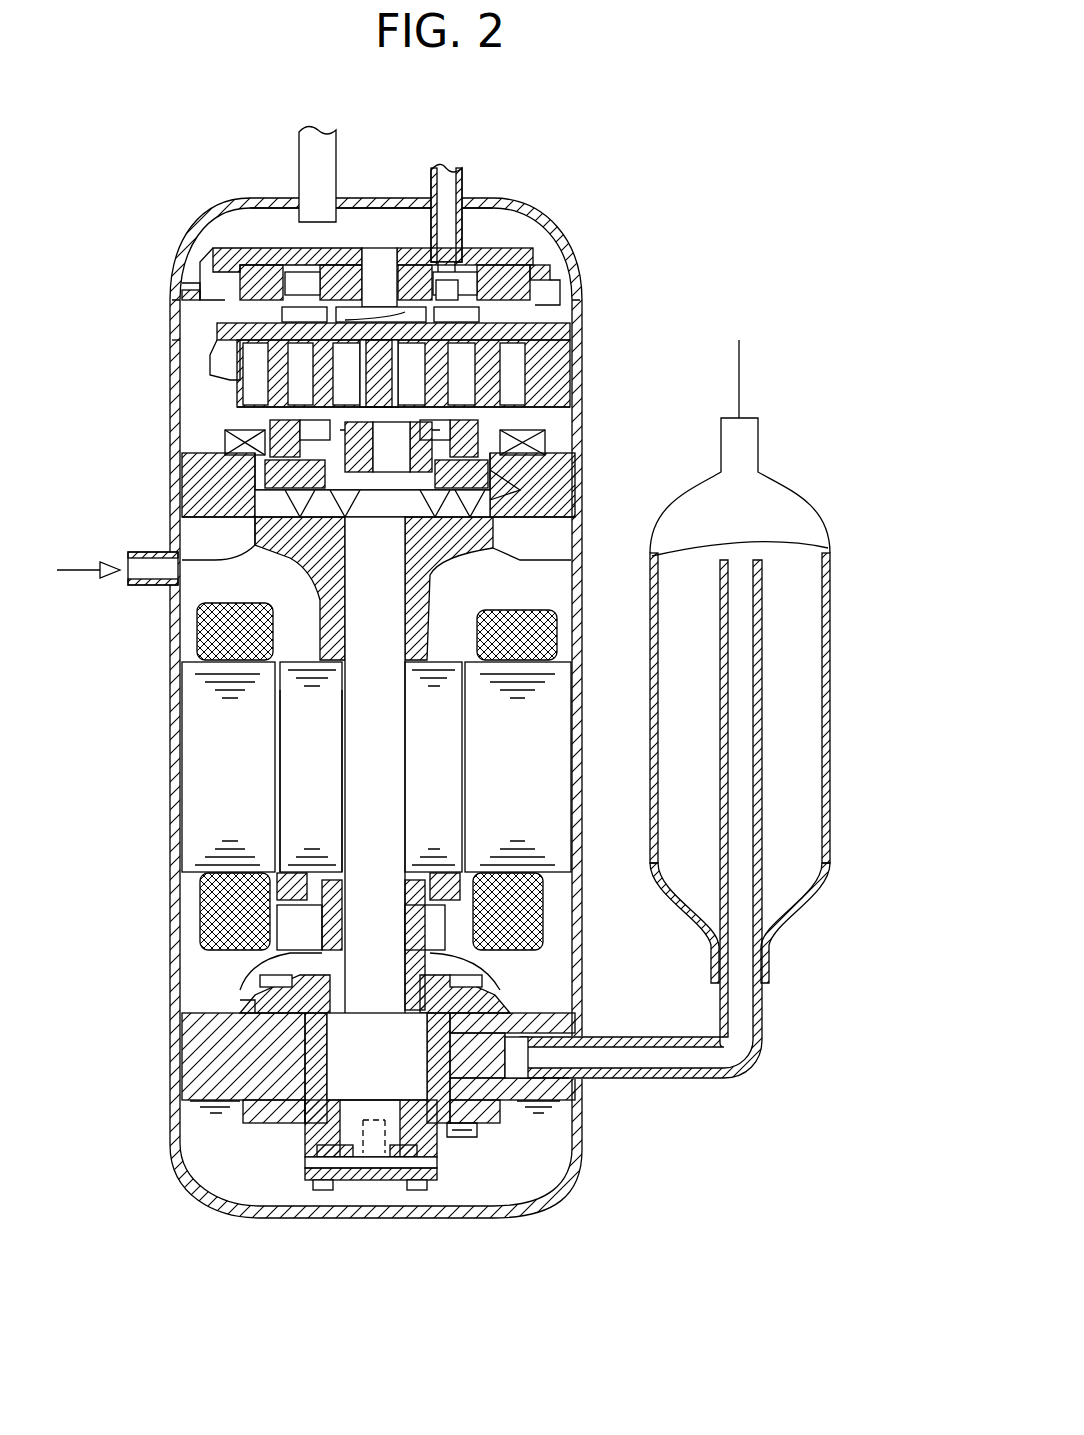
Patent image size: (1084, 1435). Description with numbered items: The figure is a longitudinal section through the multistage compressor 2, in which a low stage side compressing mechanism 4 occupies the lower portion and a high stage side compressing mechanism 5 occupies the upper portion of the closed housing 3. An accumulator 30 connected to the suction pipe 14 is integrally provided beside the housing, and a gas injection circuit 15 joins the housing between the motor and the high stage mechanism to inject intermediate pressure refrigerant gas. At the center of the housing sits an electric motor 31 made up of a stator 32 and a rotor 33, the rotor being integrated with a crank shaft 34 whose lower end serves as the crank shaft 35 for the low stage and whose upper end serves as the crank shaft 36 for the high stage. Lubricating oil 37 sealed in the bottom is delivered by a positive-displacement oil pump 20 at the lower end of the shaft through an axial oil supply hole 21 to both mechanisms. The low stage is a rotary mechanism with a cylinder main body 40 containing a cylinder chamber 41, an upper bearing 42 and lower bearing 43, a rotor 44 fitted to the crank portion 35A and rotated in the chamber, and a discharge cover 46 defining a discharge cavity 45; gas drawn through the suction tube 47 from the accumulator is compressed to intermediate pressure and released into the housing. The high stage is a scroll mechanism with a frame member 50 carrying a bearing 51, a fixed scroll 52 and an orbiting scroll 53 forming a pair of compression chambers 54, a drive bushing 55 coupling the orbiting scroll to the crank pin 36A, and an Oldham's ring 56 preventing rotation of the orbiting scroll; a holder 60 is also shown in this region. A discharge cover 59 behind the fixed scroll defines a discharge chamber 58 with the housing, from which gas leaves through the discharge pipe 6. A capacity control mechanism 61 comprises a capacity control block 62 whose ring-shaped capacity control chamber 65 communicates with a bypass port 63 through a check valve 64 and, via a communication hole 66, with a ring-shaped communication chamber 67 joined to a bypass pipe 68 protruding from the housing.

The multistage compressor 2 is at (600, 197).
The closed housing 3 is at (178, 866).
The low stage side compressing mechanism 4 is at (270, 1168).
The high stage side compressing mechanism 5 is at (190, 343).
The discharge pipe 6 is at (330, 140).
The suction pipe 14 is at (740, 378).
The gas injection circuit 15 is at (145, 590).
The positive-displacement oil pump 20 is at (350, 1185).
The oil supply hole 21 is at (375, 1150).
The accumulator 30 is at (716, 756).
The electric motor 31 is at (360, 806).
The stator 32 is at (525, 722).
The rotor 33 is at (448, 812).
The crank shaft 34 is at (365, 812).
The crank shaft 35 is at (362, 927).
The crank portion 35A is at (368, 1040).
The crank shaft 36 is at (385, 578).
The crank pin 36A is at (340, 557).
The lubricating oil 37 is at (537, 1122).
The cylinder main body 40 is at (200, 1045).
The cylinder chamber 41 is at (300, 1083).
The upper bearing 42 is at (257, 1000).
The lower bearing 43 is at (248, 1117).
The rotor 44 is at (440, 1092).
The discharge cavity 45 is at (480, 985).
The discharge cover 46 is at (470, 967).
The suction tube 47 is at (653, 1082).
The frame member 50 is at (212, 487).
The bearing 51 is at (470, 512).
The fixed scroll 52 is at (500, 355).
The orbiting scroll 53 is at (478, 405).
The compression chambers 54 is at (300, 400).
The drive bushing 55 is at (440, 452).
The Oldham's ring 56 is at (285, 440).
The discharge chamber 58 is at (262, 206).
The discharge cover 59 is at (228, 246).
The holder 60 is at (218, 368).
The capacity control mechanism 61 is at (230, 302).
The capacity control block 62 is at (230, 262).
The bypass port 63 is at (450, 333).
The check valve 64 is at (455, 300).
The capacity control chamber 65 is at (313, 308).
The communication hole 66 is at (470, 262).
The communication chamber 67 is at (453, 275).
The bypass pipe 68 is at (447, 170).